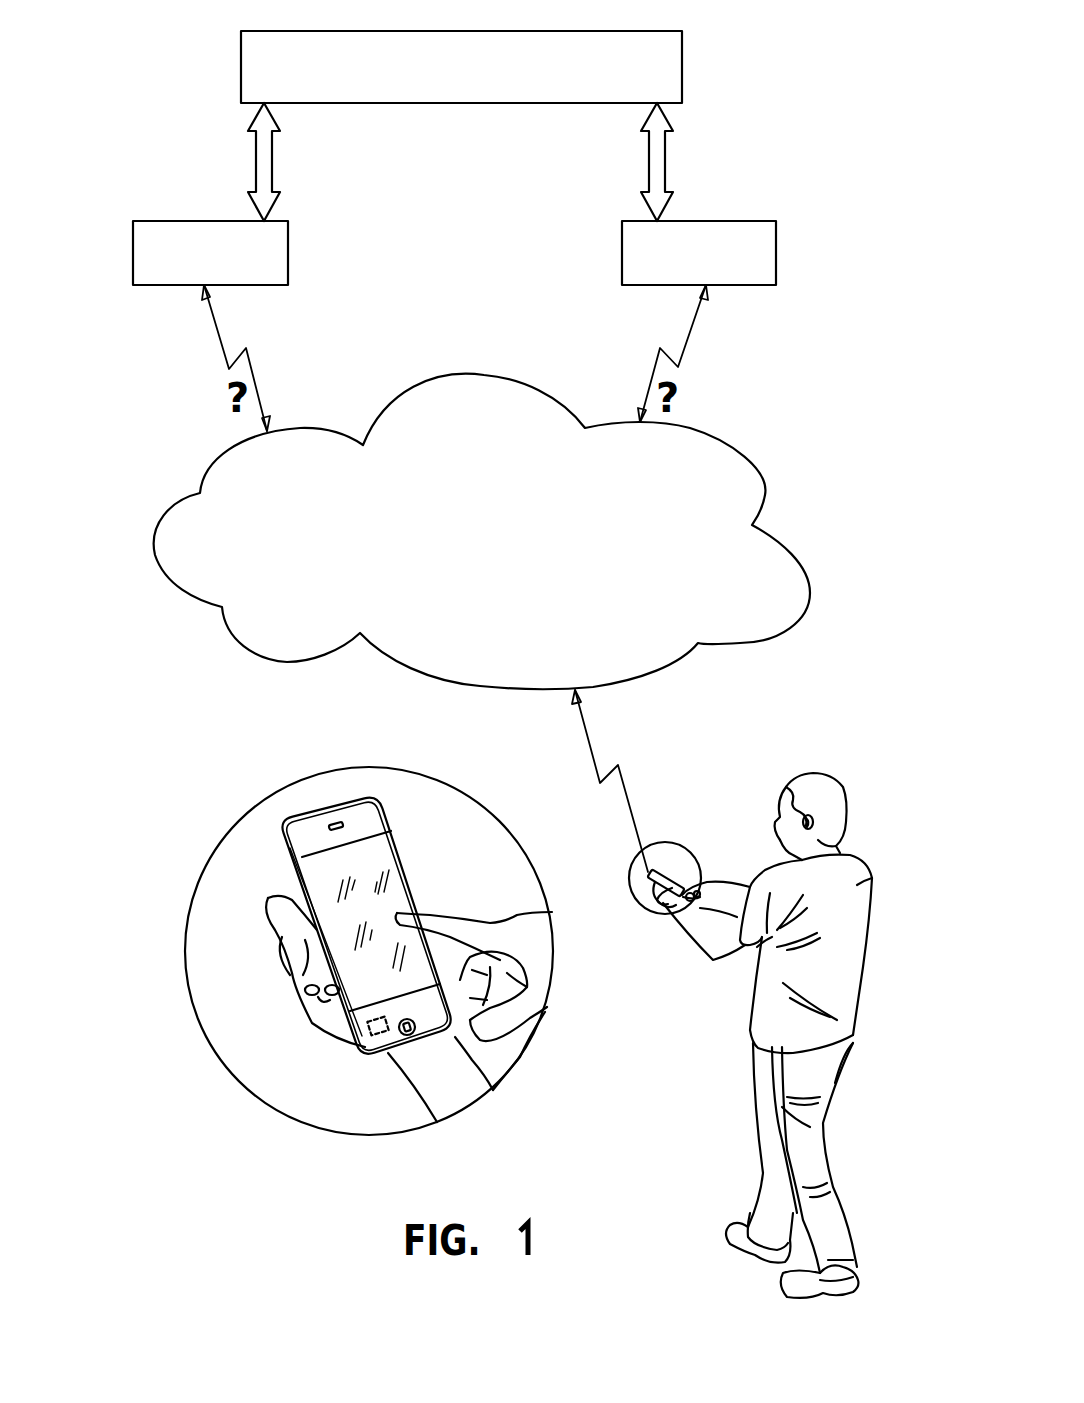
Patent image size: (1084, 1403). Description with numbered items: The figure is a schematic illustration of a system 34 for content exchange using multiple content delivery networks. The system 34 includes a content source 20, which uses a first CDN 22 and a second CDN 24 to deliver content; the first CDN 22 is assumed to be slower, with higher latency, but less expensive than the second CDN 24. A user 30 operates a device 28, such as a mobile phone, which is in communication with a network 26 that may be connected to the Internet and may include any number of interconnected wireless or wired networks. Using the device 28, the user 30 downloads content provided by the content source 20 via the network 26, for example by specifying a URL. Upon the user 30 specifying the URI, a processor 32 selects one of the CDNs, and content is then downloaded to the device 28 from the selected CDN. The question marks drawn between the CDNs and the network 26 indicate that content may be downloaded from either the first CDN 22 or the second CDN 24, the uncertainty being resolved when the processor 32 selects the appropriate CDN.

The content source 20 is at (241, 65).
The first CDN 22 is at (133, 248).
The second CDN 24 is at (776, 250).
The network 26 is at (265, 658).
The device 28 is at (697, 866).
The user 30 is at (857, 885).
The processor 32 is at (648, 908).
The system 34 is at (750, 63).